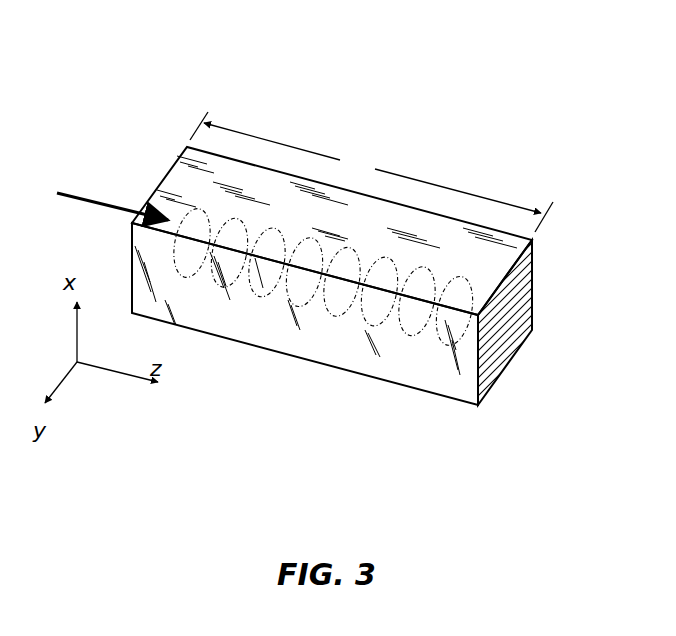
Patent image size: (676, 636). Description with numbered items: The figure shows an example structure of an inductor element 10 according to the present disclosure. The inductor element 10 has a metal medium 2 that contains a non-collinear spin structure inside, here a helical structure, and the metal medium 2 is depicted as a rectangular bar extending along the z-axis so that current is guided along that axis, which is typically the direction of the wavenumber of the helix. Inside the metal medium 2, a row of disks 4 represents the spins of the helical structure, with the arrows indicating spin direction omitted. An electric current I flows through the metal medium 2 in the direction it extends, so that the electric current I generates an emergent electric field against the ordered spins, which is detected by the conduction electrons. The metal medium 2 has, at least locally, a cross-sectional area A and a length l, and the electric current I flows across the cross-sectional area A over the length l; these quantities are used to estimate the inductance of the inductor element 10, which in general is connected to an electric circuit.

The metal medium 2 is at (325, 366).
The disk 4 is at (288, 295).
The inductor element 10 is at (193, 106).
The electric current I is at (112, 191).
The length l is at (371, 172).
The cross-sectional area A is at (508, 368).